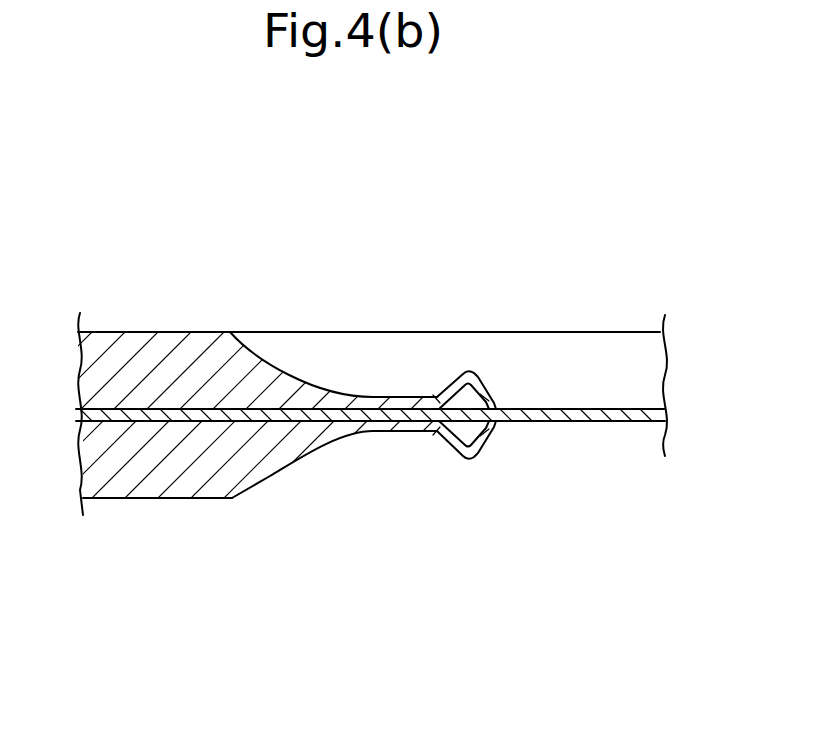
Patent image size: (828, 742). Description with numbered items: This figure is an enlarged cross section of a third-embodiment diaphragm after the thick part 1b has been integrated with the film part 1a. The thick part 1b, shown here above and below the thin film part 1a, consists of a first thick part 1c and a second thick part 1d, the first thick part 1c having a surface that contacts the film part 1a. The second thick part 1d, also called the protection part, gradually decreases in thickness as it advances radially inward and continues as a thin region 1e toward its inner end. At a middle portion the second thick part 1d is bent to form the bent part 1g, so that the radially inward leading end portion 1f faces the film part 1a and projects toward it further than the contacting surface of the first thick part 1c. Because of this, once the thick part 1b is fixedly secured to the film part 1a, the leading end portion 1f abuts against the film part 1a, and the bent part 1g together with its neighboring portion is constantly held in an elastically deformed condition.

The film part 1a is at (408, 421).
The thick part 1b is at (155, 205).
The first thick part 1c is at (145, 357).
The second thick part 1d is at (248, 360).
The thin plate portion 1e is at (292, 376).
The leading end portion 1f is at (517, 410).
The bent part 1g is at (465, 372).